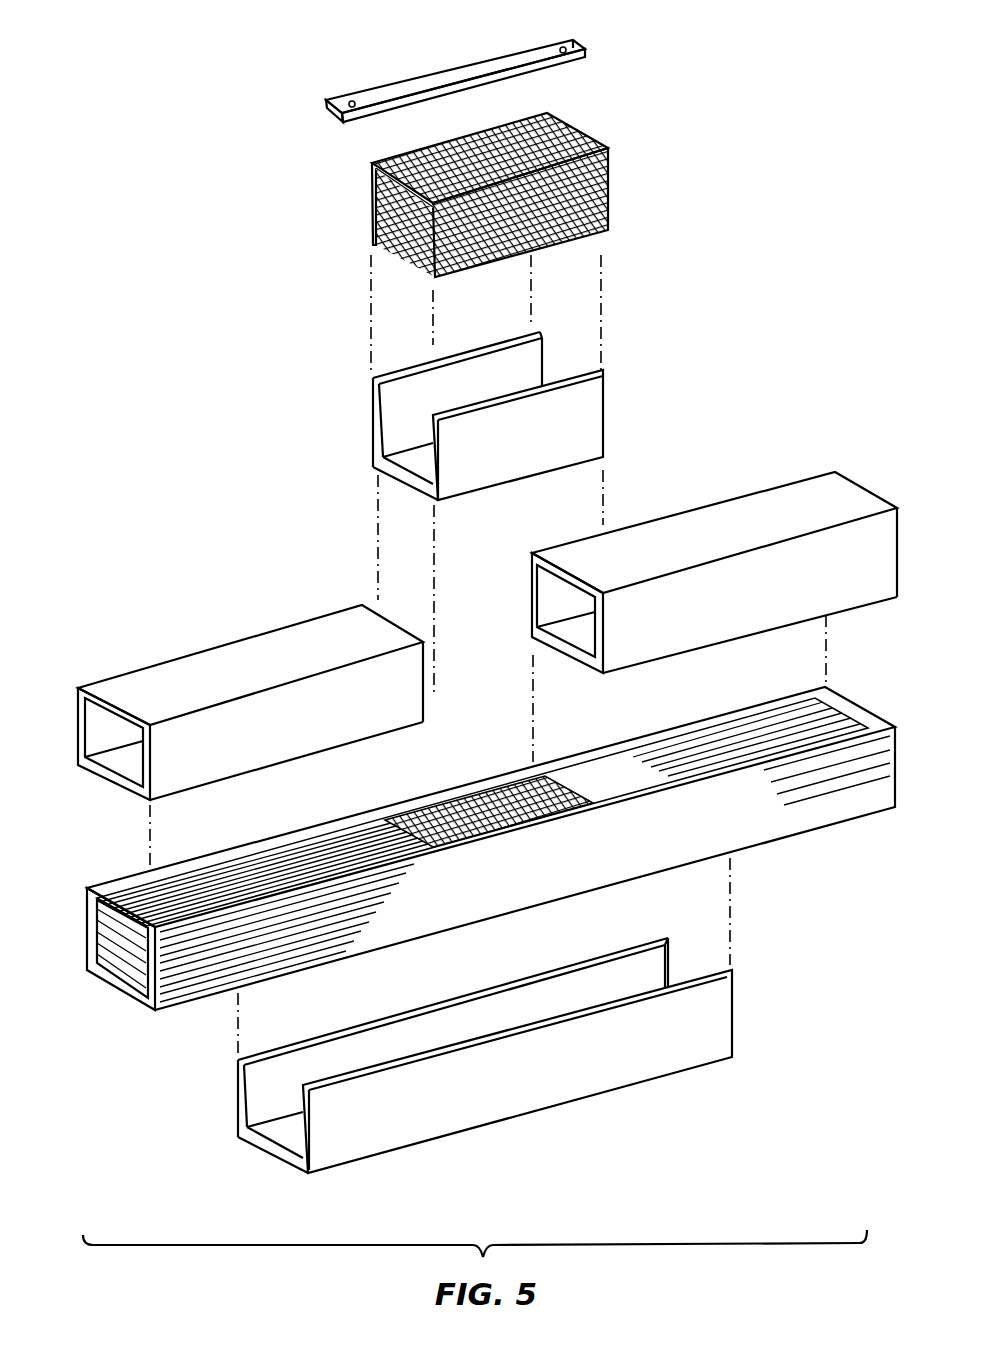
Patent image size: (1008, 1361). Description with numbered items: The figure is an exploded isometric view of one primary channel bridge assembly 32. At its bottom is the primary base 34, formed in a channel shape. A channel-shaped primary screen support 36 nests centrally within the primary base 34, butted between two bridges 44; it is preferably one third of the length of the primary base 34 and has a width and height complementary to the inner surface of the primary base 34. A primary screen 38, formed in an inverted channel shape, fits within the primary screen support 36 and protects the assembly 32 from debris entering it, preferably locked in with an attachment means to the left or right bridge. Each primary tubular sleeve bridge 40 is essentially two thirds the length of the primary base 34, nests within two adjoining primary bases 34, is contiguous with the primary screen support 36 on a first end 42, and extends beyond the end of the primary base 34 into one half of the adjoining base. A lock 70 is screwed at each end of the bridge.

The primary channel bridge assembly 32 is at (453, 927).
The primary base 34 is at (663, 1077).
The primary screen support 36 is at (372, 446).
The primary screen 38 is at (580, 131).
The primary tubular sleeve bridge 40 is at (287, 630).
The first end 42 is at (531, 600).
The bridge 44 is at (76, 688).
The lock 70 is at (367, 87).